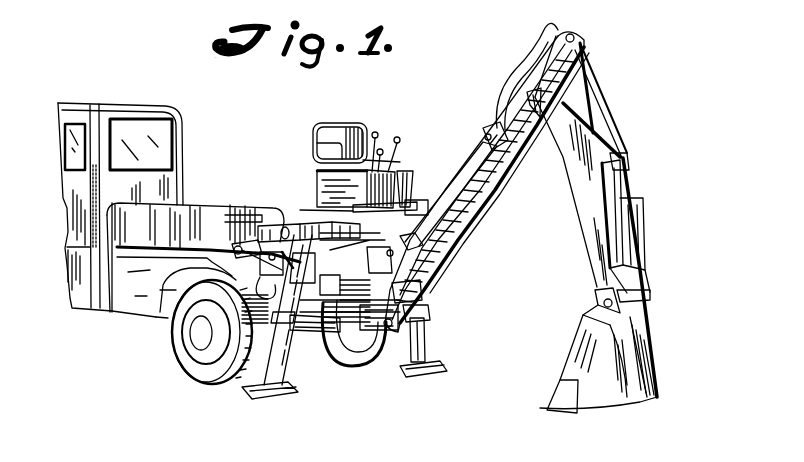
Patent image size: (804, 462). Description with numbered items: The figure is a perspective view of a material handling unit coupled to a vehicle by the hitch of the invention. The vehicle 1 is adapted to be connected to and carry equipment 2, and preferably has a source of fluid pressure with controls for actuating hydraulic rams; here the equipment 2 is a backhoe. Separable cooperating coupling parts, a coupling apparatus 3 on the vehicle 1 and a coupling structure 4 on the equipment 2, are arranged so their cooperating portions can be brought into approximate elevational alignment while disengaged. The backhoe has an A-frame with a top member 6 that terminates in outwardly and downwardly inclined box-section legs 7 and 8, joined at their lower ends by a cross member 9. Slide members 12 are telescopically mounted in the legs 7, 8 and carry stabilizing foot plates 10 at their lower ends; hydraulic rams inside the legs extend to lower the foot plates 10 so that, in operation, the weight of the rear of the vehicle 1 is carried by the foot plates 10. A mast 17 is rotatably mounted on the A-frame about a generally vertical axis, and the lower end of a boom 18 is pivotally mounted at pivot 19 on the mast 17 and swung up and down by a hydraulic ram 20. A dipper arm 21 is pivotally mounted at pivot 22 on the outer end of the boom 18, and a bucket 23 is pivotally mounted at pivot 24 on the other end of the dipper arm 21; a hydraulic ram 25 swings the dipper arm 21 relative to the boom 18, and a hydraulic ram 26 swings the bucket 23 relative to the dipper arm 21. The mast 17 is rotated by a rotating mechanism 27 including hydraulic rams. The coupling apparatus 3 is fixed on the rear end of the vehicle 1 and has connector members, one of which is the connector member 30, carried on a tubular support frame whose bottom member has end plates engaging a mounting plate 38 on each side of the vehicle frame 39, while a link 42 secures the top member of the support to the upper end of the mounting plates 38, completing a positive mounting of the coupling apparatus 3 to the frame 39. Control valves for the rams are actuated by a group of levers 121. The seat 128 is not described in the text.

The vehicle 1 is at (186, 164).
The equipment 2 is at (418, 198).
The coupling apparatus 3 is at (267, 220).
The coupling structure 4 is at (293, 220).
The top member 6 is at (338, 228).
The leg 7 is at (430, 288).
The leg 8 is at (299, 314).
The cross member 9 is at (333, 340).
The stabilizing foot plate 10 is at (432, 375).
The slide member 12 is at (427, 350).
The mast 17 is at (423, 308).
The boom 18 is at (459, 240).
The pivot 19 is at (372, 335).
The hydraulic ram 20 is at (446, 183).
The dipper arm 21 is at (582, 202).
The pivot 22 is at (542, 113).
The bucket 23 is at (582, 362).
The pivot 24 is at (594, 298).
The hydraulic ram 25 is at (588, 120).
The hydraulic ram 26 is at (630, 217).
The rotating mechanism 27 is at (342, 332).
The connector member 30 is at (345, 279).
The mounting plate 38 is at (232, 250).
The vehicle frame 39 is at (155, 315).
The link 42 is at (238, 218).
The levers 121 is at (397, 138).
The operator seat 128 is at (340, 133).